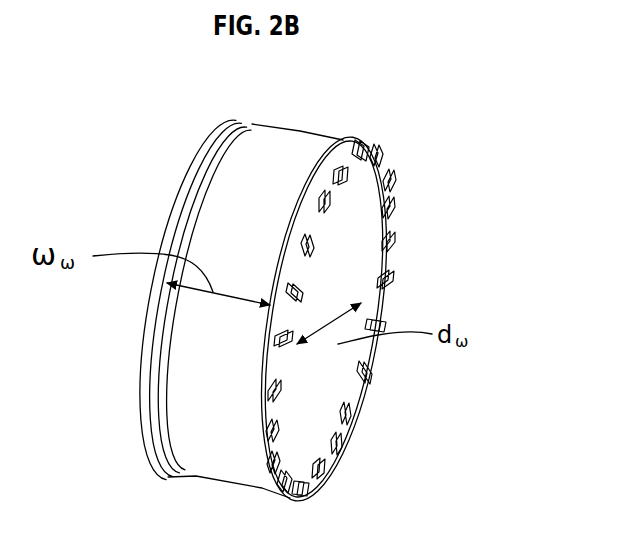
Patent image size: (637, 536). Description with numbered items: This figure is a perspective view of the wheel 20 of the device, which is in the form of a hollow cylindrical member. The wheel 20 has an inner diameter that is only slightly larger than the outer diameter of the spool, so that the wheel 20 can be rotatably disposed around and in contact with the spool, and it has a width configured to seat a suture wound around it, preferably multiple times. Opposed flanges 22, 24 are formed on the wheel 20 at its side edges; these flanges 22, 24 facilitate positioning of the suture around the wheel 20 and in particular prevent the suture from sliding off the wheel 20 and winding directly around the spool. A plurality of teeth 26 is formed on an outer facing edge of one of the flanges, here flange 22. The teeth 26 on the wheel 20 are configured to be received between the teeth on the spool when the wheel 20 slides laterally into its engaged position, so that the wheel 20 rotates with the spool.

The wheel 20 is at (323, 282).
The flange 22 is at (352, 139).
The flange 24 is at (231, 133).
The teeth 26 is at (385, 278).